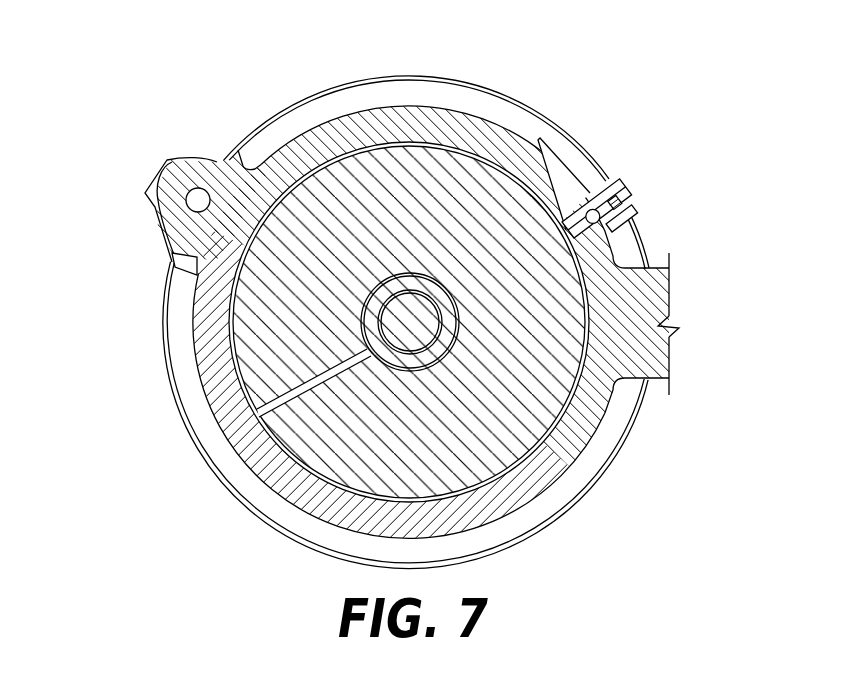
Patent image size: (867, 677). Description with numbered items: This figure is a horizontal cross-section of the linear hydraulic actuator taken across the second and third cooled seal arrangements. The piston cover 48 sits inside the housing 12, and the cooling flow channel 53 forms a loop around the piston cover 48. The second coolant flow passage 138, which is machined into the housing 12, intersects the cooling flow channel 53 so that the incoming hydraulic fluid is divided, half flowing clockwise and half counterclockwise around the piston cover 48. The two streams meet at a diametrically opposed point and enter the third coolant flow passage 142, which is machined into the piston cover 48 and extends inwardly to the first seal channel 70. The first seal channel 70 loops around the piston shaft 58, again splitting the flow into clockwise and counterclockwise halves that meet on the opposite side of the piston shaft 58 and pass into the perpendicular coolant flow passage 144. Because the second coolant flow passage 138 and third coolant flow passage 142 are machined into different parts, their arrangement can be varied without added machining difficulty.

The housing 12 is at (542, 138).
The piston cover 48 is at (570, 320).
The cooling flow channel 53 is at (315, 168).
The piston shaft 58 is at (445, 342).
The first seal channel 70 is at (360, 318).
The second coolant flow passage 138 is at (577, 230).
The third coolant flow passage 142 is at (290, 395).
The perpendicular coolant flow passage 144 is at (455, 290).